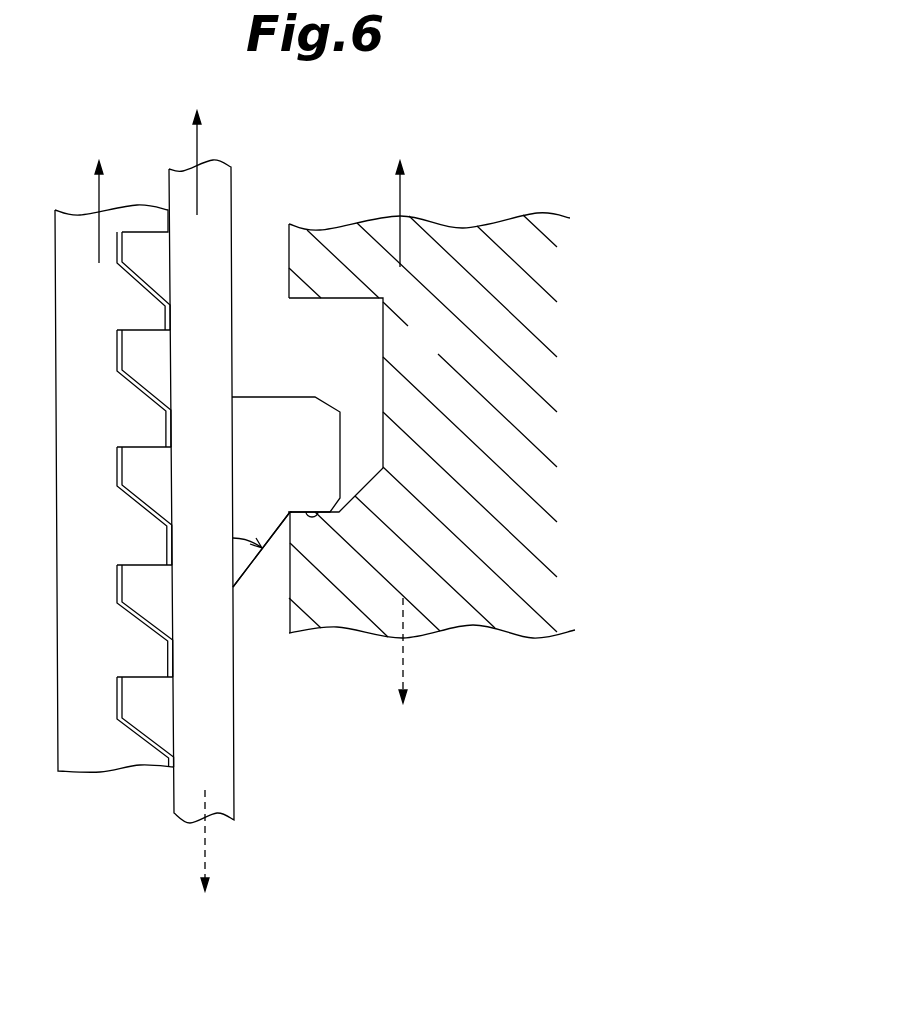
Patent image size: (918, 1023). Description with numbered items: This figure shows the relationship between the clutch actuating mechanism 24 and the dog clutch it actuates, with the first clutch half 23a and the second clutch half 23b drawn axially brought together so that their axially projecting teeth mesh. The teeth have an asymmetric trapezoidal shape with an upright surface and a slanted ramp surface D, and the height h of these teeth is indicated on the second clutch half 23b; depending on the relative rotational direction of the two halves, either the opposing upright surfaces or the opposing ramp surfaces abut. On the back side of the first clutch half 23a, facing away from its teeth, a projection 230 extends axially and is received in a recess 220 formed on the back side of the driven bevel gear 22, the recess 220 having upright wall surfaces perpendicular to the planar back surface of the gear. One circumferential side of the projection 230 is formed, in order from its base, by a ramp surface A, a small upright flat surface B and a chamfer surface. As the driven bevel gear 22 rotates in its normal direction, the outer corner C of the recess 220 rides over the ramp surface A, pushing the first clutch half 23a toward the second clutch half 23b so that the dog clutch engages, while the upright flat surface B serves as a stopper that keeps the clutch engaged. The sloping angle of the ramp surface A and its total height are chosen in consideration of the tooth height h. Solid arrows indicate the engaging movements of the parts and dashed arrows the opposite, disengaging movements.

The driven bevel gear 22 is at (471, 613).
The recess 220 is at (350, 337).
The first clutch half 23a is at (227, 783).
The second clutch half 23b is at (107, 763).
The projection 230 is at (253, 408).
The clutch actuating mechanism 24 is at (255, 269).
The ramp surface A is at (255, 562).
The upright flat surface B is at (322, 510).
The outer corner of the recess C is at (290, 510).
The ramp surface of the teeth D is at (136, 277).
The height of the teeth h is at (161, 367).